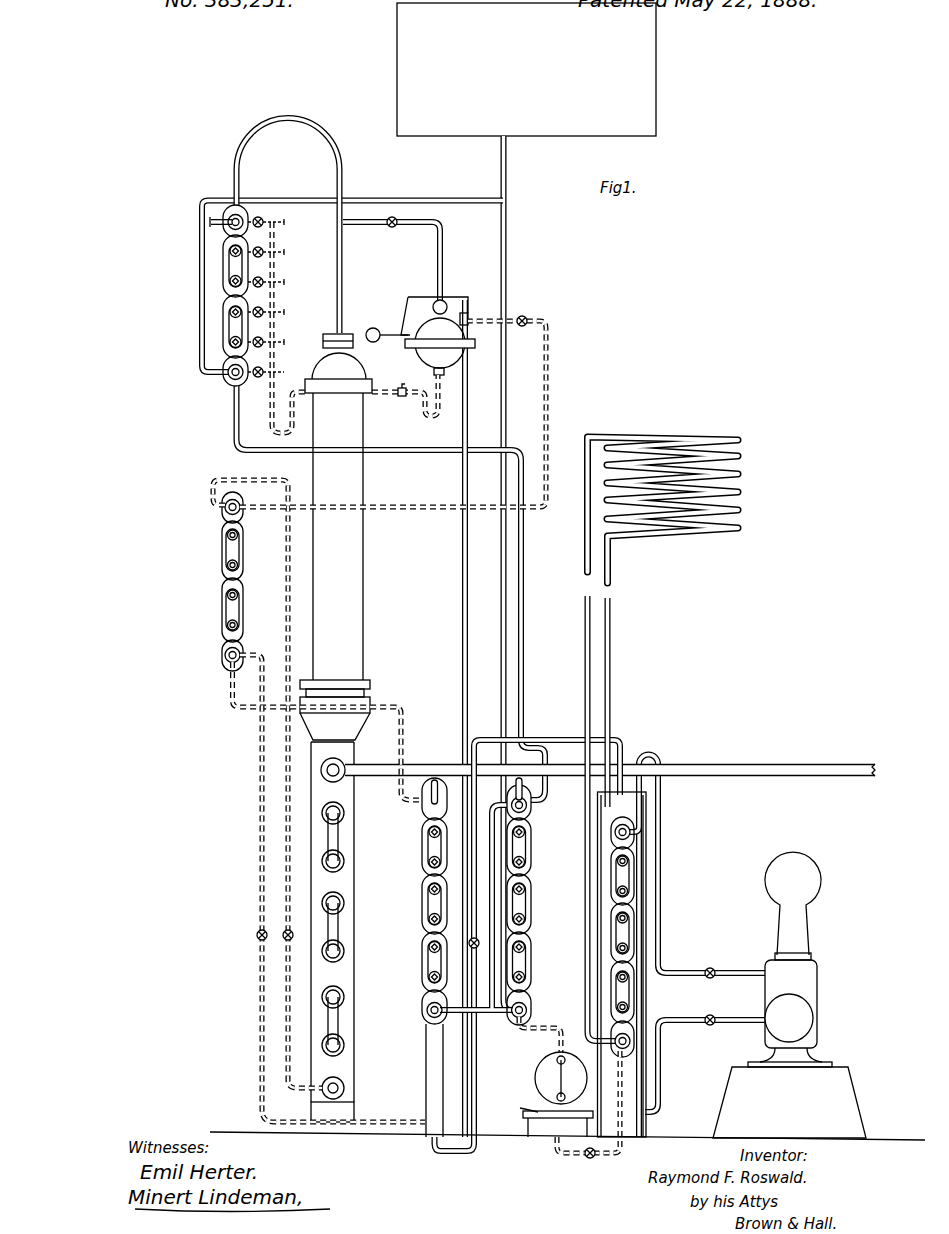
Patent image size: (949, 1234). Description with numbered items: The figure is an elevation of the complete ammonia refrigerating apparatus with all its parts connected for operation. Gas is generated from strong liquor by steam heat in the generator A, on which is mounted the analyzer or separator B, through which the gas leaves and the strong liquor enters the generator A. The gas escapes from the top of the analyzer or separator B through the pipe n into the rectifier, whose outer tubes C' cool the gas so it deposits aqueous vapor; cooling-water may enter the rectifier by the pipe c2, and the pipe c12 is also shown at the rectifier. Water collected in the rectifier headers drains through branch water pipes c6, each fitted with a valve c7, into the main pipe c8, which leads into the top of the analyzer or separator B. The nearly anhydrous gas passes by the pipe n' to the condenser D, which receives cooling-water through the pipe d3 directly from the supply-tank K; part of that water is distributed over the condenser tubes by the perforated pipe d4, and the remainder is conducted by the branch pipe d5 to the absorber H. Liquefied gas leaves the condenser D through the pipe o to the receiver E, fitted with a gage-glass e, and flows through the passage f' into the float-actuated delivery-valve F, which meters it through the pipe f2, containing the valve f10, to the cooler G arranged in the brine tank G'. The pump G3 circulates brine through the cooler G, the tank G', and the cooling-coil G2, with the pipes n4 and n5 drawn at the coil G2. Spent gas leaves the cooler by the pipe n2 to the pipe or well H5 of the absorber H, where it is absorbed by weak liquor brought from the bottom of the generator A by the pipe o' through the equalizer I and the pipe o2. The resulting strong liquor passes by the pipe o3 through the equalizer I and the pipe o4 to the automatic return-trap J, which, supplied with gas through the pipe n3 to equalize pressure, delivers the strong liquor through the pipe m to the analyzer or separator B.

The supply-tank K is at (526, 69).
The pipe d3 is at (508, 1032).
The pipe c2 is at (344, 275).
The connection of pipe c2 c12 is at (211, 294).
The pipe n is at (297, 225).
The pipe n' is at (400, 600).
The main pipe c8 is at (288, 327).
The branch water pipes c6 is at (275, 292).
The valves c7 is at (258, 296).
The outer tubes C' is at (225, 295).
The pipe n3 is at (668, 817).
The automatic return-trap J is at (420, 717).
The pipe m is at (405, 393).
The analyzer or separator B is at (336, 537).
The generator A is at (349, 870).
The equalizer I is at (221, 581).
The pipe o' is at (267, 775).
The pipe o4 is at (406, 412).
The pipe o2 is at (332, 740).
The pipe o3 is at (332, 880).
The pipe n2 is at (600, 946).
The branch pipe d5 is at (406, 1008).
The absorber H is at (423, 901).
The pipe or well H5 is at (430, 1080).
The condenser D is at (529, 905).
The pipe d4 is at (524, 793).
The cooling-coil G2 is at (663, 510).
The pipe n4 is at (585, 479).
The pipe n5 is at (623, 702).
The cooler G is at (635, 964).
The tank G' is at (652, 937).
The pump G3 is at (789, 995).
The pipe o is at (540, 1031).
The receiver E is at (561, 1078).
The gage-glass e is at (553, 1078).
The passage f' is at (520, 1104).
The float-actuated delivery-valve F is at (558, 1124).
The pipe f2 is at (597, 1112).
The valve f10 is at (595, 1161).